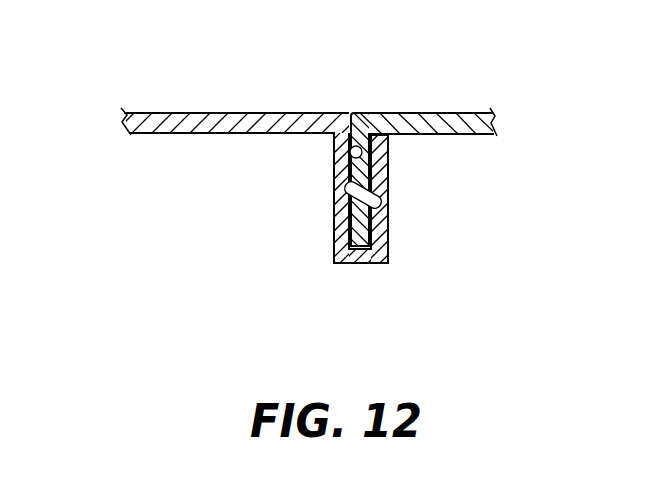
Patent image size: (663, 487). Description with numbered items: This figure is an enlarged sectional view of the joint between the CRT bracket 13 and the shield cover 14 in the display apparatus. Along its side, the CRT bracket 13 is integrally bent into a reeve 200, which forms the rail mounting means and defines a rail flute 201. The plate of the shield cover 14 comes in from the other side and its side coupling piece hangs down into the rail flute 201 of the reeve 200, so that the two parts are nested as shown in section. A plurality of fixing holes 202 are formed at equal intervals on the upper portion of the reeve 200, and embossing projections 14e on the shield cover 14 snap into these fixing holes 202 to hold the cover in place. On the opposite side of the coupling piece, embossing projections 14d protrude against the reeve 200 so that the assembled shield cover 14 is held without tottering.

The CRT bracket 13 is at (158, 122).
The shield cover 14 is at (442, 113).
The embossing projections 14d is at (347, 192).
The embossing projections 14e is at (388, 193).
The reeve 200 is at (306, 248).
The rail flute 201 is at (349, 142).
The fixing holes 202 is at (388, 201).